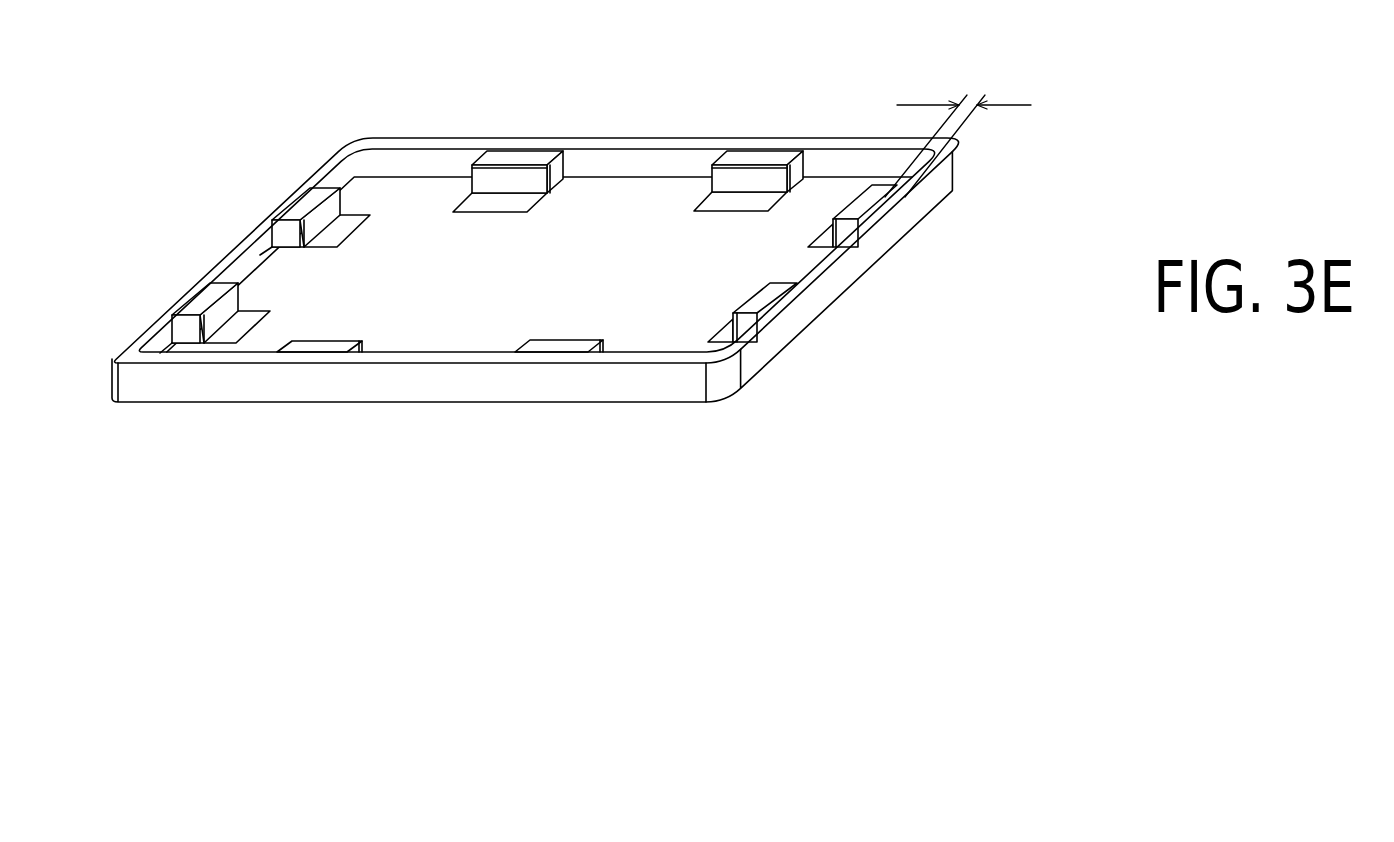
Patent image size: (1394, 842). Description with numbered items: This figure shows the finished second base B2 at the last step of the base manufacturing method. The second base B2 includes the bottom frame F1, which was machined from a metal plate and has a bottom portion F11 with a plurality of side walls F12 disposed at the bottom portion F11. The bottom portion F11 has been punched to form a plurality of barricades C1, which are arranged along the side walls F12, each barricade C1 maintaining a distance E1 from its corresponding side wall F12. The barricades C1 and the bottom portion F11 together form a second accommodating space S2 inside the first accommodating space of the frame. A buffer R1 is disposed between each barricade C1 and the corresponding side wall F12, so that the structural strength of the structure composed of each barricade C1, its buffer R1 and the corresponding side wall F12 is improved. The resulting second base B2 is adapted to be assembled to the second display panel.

The bottom frame F1 is at (973, 186).
The bottom portion F11 is at (415, 188).
The side walls F12 is at (878, 243).
The distance E1 is at (968, 103).
The second accommodating space S2 is at (602, 228).
The barricades C1 is at (517, 175).
The buffer R1 is at (300, 206).
The second base B2 is at (884, 405).